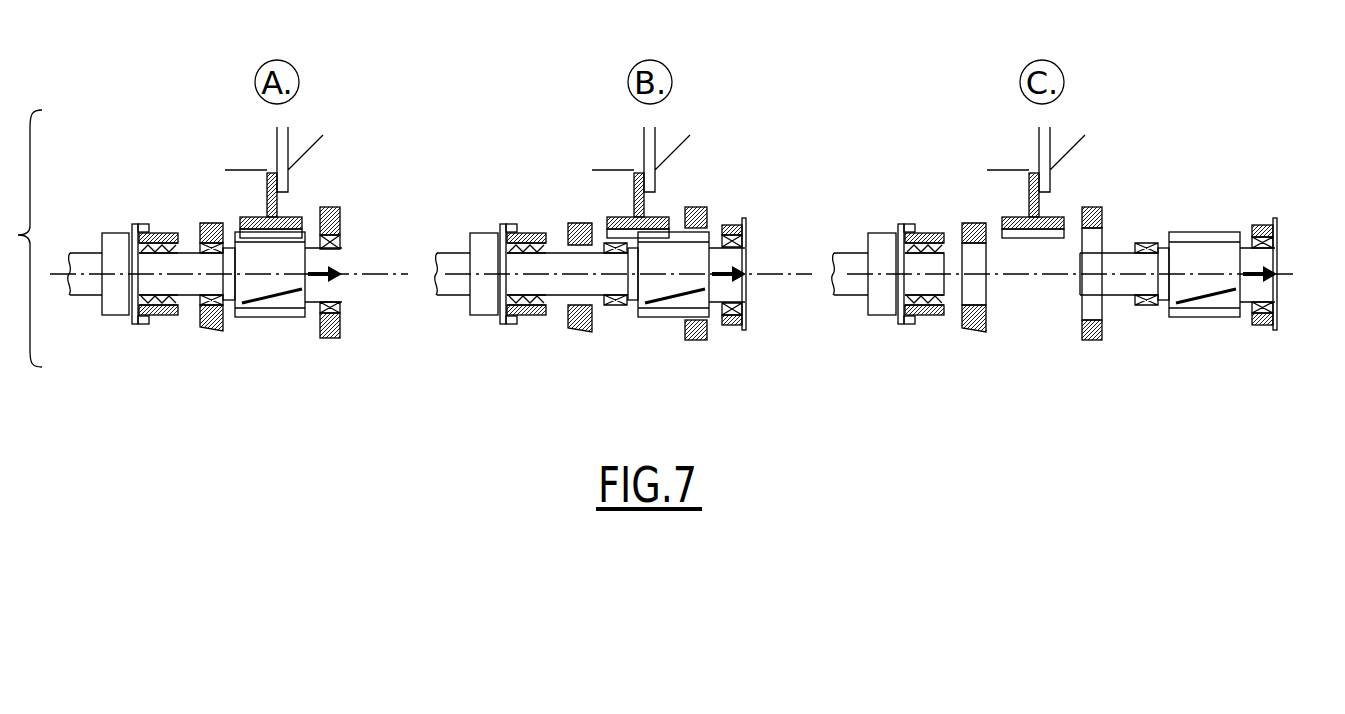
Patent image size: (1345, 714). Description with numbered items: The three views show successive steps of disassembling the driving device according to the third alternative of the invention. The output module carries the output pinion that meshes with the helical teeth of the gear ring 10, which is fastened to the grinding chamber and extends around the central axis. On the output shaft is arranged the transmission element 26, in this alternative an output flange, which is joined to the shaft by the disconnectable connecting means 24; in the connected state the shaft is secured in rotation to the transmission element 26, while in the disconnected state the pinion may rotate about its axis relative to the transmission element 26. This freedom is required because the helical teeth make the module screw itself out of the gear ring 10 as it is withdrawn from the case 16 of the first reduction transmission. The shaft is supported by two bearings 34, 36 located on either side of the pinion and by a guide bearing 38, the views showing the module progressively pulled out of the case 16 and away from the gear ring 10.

In FIG. 7A, the gear ring 10 is at (287, 217).
In FIG. 7B, the gear ring 10 is at (658, 217).
In FIG. 7C, the gear ring 10 is at (1055, 217).
In FIG. 7A, the case 16 is at (333, 338).
In FIG. 7B, the case 16 is at (695, 340).
In FIG. 7C, the case 16 is at (1090, 340).
In FIG. 7A, the disconnectable connecting means 24 is at (178, 243).
In FIG. 7B, the disconnectable connecting means 24 is at (546, 243).
In FIG. 7C, the disconnectable connecting means 24 is at (944, 243).
In FIG. 7A, the transmission element 26 is at (137, 206).
In FIG. 7B, the transmission element 26 is at (503, 206).
In FIG. 7C, the transmission element 26 is at (903, 206).
In FIG. 7A, the bearing 34 is at (200, 306).
In FIG. 7A, the bearing 36 is at (342, 240).
In FIG. 7B, the bearing 36 is at (745, 238).
In FIG. 7C, the bearing 36 is at (1276, 242).
In FIG. 7A, the guide bearing 38 is at (342, 228).
In FIG. 7B, the guide bearing 38 is at (745, 225).
In FIG. 7C, the guide bearing 38 is at (1275, 228).